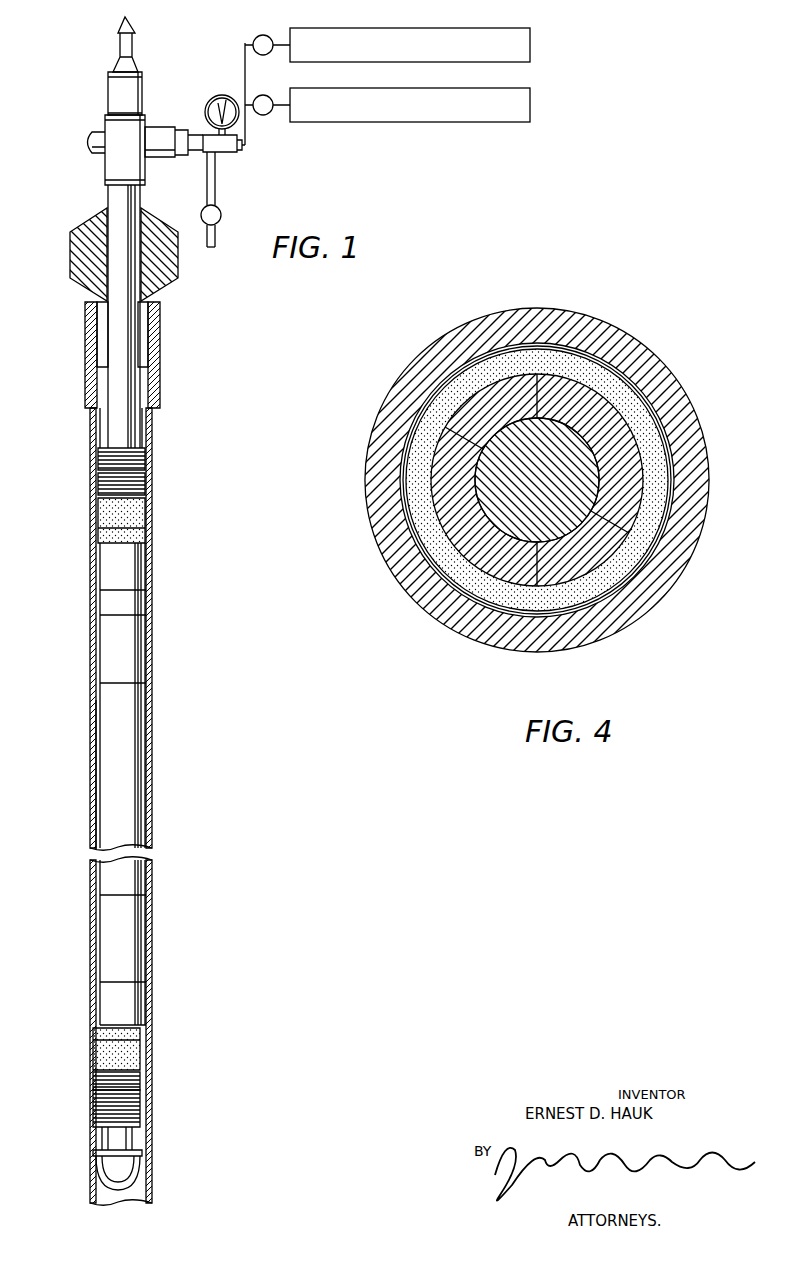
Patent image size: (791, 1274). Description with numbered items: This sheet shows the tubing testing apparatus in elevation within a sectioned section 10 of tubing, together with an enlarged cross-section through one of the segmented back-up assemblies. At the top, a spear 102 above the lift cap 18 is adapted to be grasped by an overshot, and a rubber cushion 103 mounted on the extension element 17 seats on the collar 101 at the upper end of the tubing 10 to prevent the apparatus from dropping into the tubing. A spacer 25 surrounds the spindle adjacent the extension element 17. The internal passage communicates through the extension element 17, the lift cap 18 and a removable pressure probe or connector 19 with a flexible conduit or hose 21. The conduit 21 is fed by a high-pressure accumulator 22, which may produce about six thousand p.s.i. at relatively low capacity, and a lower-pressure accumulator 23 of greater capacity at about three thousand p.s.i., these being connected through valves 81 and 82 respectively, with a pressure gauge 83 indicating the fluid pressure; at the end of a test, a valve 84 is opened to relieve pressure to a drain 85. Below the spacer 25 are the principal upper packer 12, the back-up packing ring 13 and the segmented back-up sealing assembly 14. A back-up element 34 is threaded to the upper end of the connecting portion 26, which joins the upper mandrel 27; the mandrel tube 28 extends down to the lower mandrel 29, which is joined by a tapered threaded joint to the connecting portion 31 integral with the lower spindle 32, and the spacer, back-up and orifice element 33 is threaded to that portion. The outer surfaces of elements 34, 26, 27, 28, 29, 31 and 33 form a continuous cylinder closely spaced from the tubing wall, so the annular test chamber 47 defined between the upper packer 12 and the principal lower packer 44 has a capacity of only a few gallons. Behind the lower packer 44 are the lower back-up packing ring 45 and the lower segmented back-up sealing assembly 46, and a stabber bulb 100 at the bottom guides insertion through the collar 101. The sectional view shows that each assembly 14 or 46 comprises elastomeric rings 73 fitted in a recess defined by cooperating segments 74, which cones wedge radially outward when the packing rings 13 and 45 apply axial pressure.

In FIG. 1, the tubing section 10 is at (152, 597).
In FIG. 4, the tubing section 10 is at (694, 548).
In FIG. 1, the principal upper packer 12 is at (156, 521).
In FIG. 1, the back-up packing ring 13 is at (150, 490).
In FIG. 1, the segmented back-up sealing assembly 14 is at (156, 461).
In FIG. 1, the extension element 17 is at (116, 323).
In FIG. 1, the lift cap 18 is at (108, 165).
In FIG. 1, the removable pressure probe or connector 19 is at (152, 128).
In FIG. 1, the flexible conduit or hose 21 is at (240, 152).
In FIG. 1, the high-pressure accumulator 22 is at (530, 118).
In FIG. 1, the lower-pressure accumulator 23 is at (530, 58).
In FIG. 1, the spacer 25 is at (110, 437).
In FIG. 1, the connecting portion 26 is at (106, 602).
In FIG. 1, the upper mandrel 27 is at (106, 649).
In FIG. 1, the mandrel tube or pipe 28 is at (100, 751).
In FIG. 1, the lower mandrel 29 is at (100, 881).
In FIG. 1, the connecting portion 31 is at (100, 942).
In FIG. 4, the lower or bottom spindle 32 is at (558, 506).
In FIG. 1, the spacer, back-up and orifice element 33 is at (100, 1001).
In FIG. 1, the back-up element 34 is at (100, 563).
In FIG. 1, the principal lower packer 44 is at (88, 1056).
In FIG. 1, the lower back-up packing ring 45 is at (94, 1082).
In FIG. 1, the lower segmented back-up sealing assembly 46 is at (88, 1111).
In FIG. 4, the lower segmented back-up sealing assembly 46 is at (603, 340).
In FIG. 1, the annular test chamber 47 is at (96, 773).
In FIG. 4, the elastomeric rings 73 is at (620, 385).
In FIG. 4, the cooperating segments 74 is at (585, 428).
In FIG. 1, the valve 81 is at (272, 80).
In FIG. 1, the valve 82 is at (263, 35).
In FIG. 1, the pressure gauge 83 is at (218, 95).
In FIG. 1, the valve 84 is at (221, 210).
In FIG. 1, the drain 85 is at (213, 250).
In FIG. 1, the stabber bulb 100 is at (100, 1170).
In FIG. 1, the collar 101 is at (96, 348).
In FIG. 1, the spear 102 is at (118, 24).
In FIG. 1, the cushion 103 is at (70, 254).